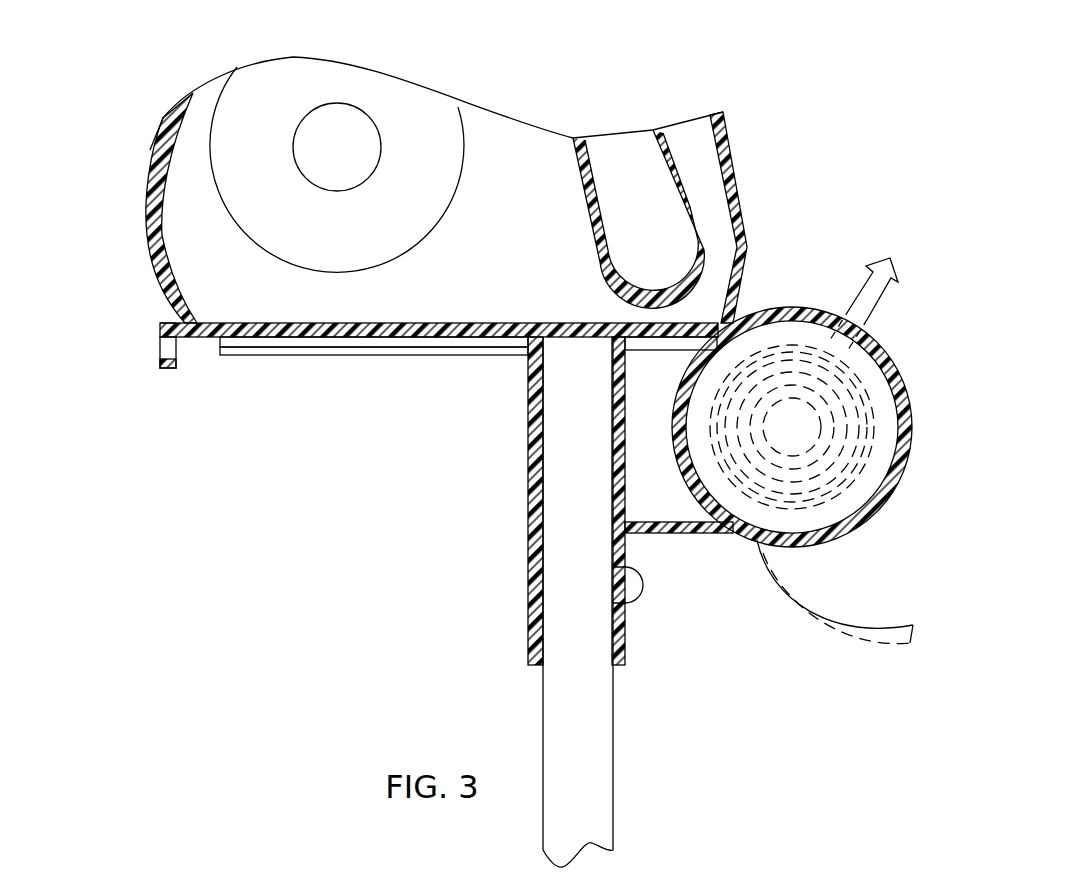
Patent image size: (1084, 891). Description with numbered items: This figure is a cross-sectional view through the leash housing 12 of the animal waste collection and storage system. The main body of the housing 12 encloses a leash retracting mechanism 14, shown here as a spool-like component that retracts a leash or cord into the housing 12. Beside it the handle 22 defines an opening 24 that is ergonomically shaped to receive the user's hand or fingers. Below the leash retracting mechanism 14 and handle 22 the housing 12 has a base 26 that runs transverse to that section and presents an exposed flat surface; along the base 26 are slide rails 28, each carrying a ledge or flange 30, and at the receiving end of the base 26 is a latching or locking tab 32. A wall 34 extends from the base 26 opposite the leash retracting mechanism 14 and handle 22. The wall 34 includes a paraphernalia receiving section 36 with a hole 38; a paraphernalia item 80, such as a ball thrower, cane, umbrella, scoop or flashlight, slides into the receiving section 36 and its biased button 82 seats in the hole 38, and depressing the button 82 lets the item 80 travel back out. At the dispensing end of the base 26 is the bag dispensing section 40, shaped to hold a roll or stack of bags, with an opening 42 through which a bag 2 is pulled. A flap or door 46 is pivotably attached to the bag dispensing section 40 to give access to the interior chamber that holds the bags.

The bag 2 is at (887, 272).
The leash housing 12 is at (140, 141).
The leash retracting mechanism 14 is at (312, 110).
The handle 22 is at (733, 158).
The opening 24 is at (622, 158).
The base 26 is at (173, 320).
The slide rail 28 is at (252, 340).
The flange 30 is at (313, 355).
The locking tab 32 is at (160, 353).
The wall 34 is at (528, 512).
The paraphernalia receiving section 36 is at (628, 657).
The hole 38 is at (627, 608).
The bag dispensing section 40 is at (770, 308).
The opening 42 is at (800, 348).
The door 46 is at (860, 627).
The paraphernalia item 80 is at (543, 728).
The button 82 is at (637, 592).